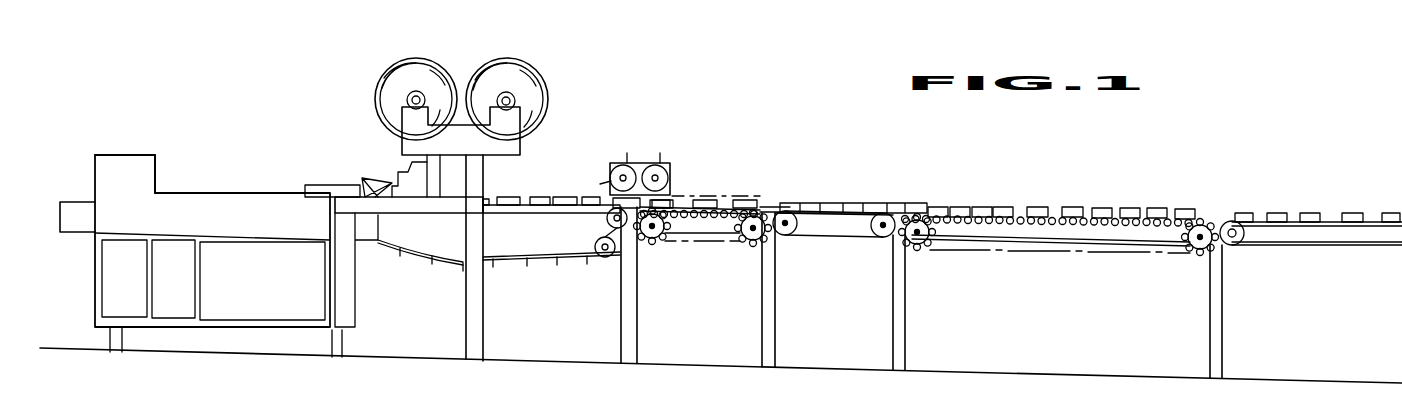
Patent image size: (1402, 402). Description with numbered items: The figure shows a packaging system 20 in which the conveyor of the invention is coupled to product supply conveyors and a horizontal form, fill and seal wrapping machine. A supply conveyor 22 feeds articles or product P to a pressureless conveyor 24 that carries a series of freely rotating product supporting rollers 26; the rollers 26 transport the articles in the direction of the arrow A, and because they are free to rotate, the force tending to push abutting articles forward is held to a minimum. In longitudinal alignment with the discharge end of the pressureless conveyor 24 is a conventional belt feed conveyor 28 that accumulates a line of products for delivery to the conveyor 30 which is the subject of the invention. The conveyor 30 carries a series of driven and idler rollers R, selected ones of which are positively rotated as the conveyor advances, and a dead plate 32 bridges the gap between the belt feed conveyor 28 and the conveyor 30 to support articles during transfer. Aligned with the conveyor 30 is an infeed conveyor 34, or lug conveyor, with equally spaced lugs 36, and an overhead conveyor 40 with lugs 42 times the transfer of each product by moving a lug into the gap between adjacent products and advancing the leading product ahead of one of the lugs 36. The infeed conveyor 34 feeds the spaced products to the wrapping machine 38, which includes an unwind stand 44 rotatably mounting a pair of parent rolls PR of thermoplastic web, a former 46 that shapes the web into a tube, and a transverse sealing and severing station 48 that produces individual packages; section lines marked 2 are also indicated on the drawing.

The packaging system 20 is at (655, 110).
The supply conveyor 22 is at (1332, 220).
The pressureless conveyor 24 is at (1053, 217).
The product supporting rollers 26 is at (1195, 250).
The belt feed conveyor 28 is at (860, 238).
The conveyor 30 is at (690, 246).
The dead plate 32 is at (770, 212).
The infeed conveyor 34 is at (548, 263).
The lugs 36 is at (582, 197).
The wrapping machine 38 is at (290, 186).
The overhead conveyor 40 is at (610, 168).
The lugs 42 is at (660, 160).
The unwind stand 44 is at (404, 148).
The former 46 is at (328, 185).
The transverse sealing and severing station 48 is at (148, 152).
The product P is at (534, 197).
The parent rolls PR is at (477, 74).
The driven and idler rollers R is at (724, 200).
The arrow A is at (927, 183).
The section line for FIG. 2 is at (665, 188).